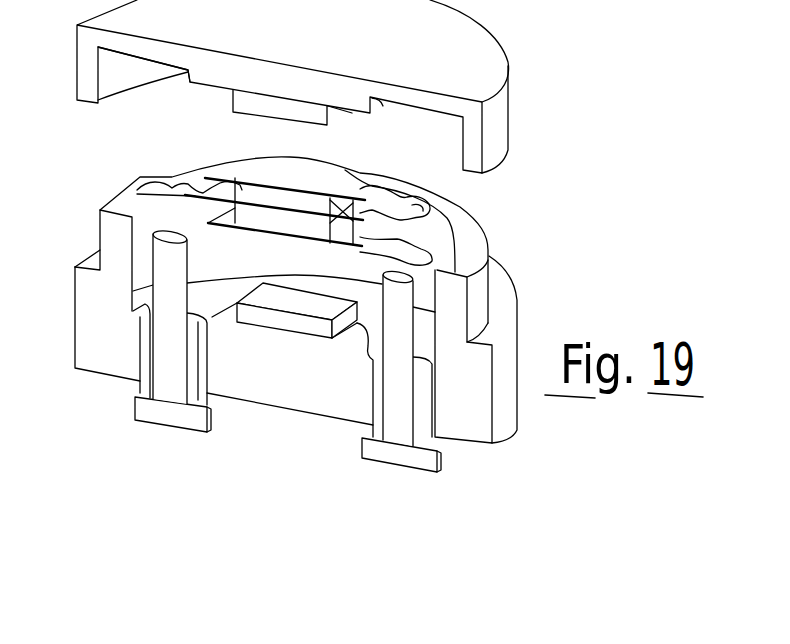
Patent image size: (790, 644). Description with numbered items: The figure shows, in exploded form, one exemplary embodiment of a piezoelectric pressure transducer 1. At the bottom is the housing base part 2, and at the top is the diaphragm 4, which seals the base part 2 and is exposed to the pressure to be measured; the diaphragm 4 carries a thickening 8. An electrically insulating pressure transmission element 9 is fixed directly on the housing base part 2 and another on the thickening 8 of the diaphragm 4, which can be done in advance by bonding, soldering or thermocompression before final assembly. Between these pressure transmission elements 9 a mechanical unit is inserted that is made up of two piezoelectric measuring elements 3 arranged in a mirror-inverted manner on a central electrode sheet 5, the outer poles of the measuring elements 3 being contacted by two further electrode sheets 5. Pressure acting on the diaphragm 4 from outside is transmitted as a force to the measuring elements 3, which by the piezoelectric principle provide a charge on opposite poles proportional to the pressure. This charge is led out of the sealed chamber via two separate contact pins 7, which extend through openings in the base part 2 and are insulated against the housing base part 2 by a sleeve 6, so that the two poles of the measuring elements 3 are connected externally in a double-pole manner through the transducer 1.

The piezoelectric pressure transducer 1 is at (482, 212).
The housing base part 2 is at (255, 382).
The piezoelectric measuring element 3 is at (284, 203).
The diaphragm 4 is at (475, 40).
The electrode sheet 5 is at (327, 168).
The sleeve 6 is at (150, 345).
The contact pin 7 is at (168, 402).
The thickening of the diaphragm 8 is at (222, 67).
The electrically insulating pressure transmission element 9 is at (277, 112).